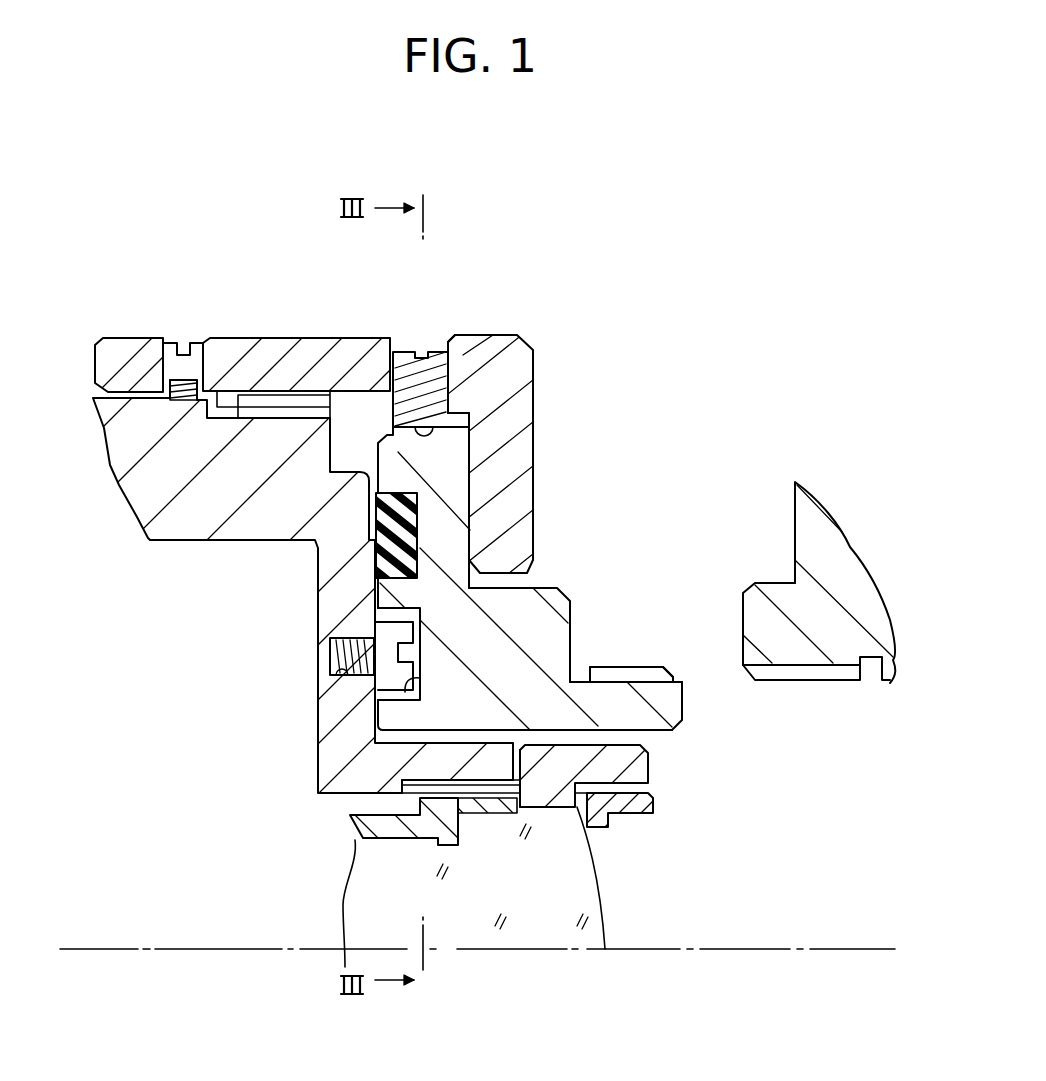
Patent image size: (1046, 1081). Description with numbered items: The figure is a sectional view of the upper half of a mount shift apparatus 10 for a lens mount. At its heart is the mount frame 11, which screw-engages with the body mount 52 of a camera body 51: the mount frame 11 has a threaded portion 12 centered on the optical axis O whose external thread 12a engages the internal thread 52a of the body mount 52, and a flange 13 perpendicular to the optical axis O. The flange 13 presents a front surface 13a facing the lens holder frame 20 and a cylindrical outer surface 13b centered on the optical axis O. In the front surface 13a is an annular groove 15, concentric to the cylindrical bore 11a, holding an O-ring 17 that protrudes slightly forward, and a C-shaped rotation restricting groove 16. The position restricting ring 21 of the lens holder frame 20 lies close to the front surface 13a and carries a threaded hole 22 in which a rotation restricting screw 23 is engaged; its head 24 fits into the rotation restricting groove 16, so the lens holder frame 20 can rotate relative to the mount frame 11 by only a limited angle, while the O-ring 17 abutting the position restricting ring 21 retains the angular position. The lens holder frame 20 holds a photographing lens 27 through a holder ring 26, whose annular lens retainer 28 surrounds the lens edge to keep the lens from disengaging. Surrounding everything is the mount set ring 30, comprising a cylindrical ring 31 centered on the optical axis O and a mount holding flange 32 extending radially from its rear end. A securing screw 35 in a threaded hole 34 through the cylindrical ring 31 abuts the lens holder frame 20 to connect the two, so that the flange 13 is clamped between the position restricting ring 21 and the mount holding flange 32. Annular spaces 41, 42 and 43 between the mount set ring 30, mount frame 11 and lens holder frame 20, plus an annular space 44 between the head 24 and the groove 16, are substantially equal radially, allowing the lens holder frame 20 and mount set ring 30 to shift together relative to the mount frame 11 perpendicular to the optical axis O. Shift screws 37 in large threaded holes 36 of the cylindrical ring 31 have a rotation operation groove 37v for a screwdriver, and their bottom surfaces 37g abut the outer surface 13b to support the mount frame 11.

The mount shift apparatus 10 is at (655, 342).
The mount frame 11 is at (557, 618).
The cylindrical bore 11a is at (500, 730).
The threaded portion 12 is at (668, 702).
The external thread 12a is at (643, 673).
The flange 13 is at (450, 442).
The front surface 13a is at (376, 600).
The cylindrical outer surface 13b is at (403, 418).
The annular groove 15 is at (415, 547).
The rotation restricting groove 16 is at (420, 675).
The O-ring 17 is at (366, 545).
The lens holder frame 20 is at (318, 752).
The position restricting ring 21 is at (340, 722).
The threaded hole 22 is at (346, 680).
The rotation restricting screw 23 is at (337, 655).
The head 24 is at (413, 637).
The holder ring 26 is at (637, 768).
The photographing lens 27 is at (585, 893).
The annular lens retainer 28 is at (647, 807).
The mount set ring 30 is at (516, 464).
The cylindrical ring 31 is at (260, 347).
The mount holding flange 32 is at (495, 527).
The threaded hole 34 is at (172, 347).
The securing screw 35 is at (185, 347).
The threaded holes 36 is at (535, 351).
The shift screws 37 is at (440, 352).
The rotation operation groove 37v is at (421, 352).
The bottom surfaces 37g is at (477, 350).
The annular space 41 is at (470, 416).
The annular space 42 is at (520, 580).
The annular space 43 is at (633, 737).
The annular space 44 is at (376, 627).
The camera body 51 is at (807, 510).
The body mount 52 is at (753, 607).
The internal thread 52a is at (808, 668).
The optical axis O is at (659, 955).